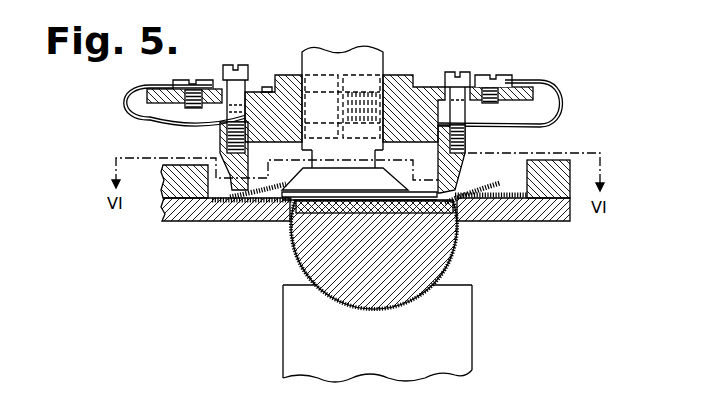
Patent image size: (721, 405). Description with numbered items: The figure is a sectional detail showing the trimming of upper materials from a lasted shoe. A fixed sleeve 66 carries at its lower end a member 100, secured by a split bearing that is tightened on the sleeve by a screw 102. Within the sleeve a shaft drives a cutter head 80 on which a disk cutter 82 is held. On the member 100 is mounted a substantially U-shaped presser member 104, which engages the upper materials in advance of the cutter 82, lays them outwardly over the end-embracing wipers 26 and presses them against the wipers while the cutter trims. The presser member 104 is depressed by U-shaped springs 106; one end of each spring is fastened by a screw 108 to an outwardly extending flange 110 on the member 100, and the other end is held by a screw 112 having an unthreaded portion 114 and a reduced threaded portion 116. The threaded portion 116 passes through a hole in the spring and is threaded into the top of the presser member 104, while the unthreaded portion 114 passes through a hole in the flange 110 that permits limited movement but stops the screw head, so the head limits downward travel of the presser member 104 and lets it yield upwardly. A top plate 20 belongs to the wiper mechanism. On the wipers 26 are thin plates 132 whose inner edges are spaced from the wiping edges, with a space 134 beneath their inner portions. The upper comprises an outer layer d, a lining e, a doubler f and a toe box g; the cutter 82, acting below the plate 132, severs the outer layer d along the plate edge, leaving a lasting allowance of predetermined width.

The fixed sleeve 66 is at (370, 58).
The member 100 is at (423, 87).
The screw 102 is at (267, 77).
The screw 108 is at (182, 84).
The outwardly extending flange 110 is at (157, 104).
The U-shaped spring 106 is at (563, 98).
The screw 112 is at (458, 72).
The unthreaded portion 114 is at (463, 117).
The reduced threaded portion 116 is at (466, 143).
The space 134 is at (235, 204).
The presser member 104 is at (468, 158).
The cutter head 80 is at (377, 175).
The disk cutter 82 is at (415, 194).
The thin plate 132 is at (213, 210).
The top plate 20 is at (570, 197).
The end-embracing wiper 26 is at (282, 210).
The outer layer d is at (493, 204).
The inner layer e is at (488, 182).
The toe box g is at (500, 183).
The intermediate layer f is at (503, 183).